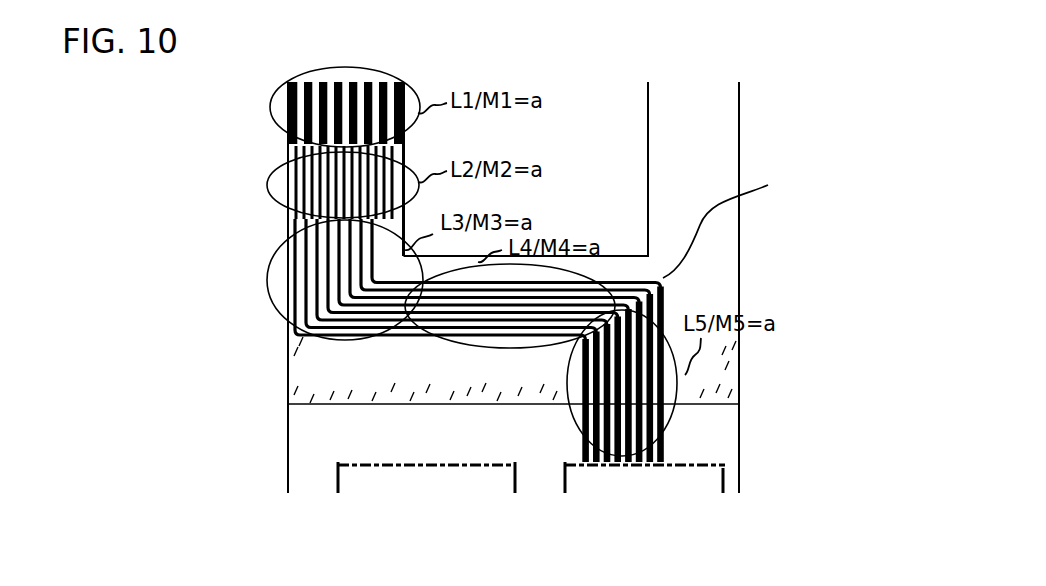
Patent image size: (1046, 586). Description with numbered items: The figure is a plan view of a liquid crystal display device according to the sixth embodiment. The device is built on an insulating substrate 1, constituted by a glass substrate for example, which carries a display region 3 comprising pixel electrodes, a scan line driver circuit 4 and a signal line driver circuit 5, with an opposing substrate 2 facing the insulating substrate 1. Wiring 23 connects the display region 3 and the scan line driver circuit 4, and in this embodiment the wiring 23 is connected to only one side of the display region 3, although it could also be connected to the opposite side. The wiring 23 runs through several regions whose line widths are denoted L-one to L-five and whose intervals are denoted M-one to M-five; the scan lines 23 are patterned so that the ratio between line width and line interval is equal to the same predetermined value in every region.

The insulating substrate 1 is at (739, 445).
The opposing substrate 2 is at (703, 148).
The display region 3 is at (648, 108).
The scan line driver circuit 4 is at (700, 478).
The signal line driver circuit 5 is at (355, 481).
The wiring 23 is at (736, 225).